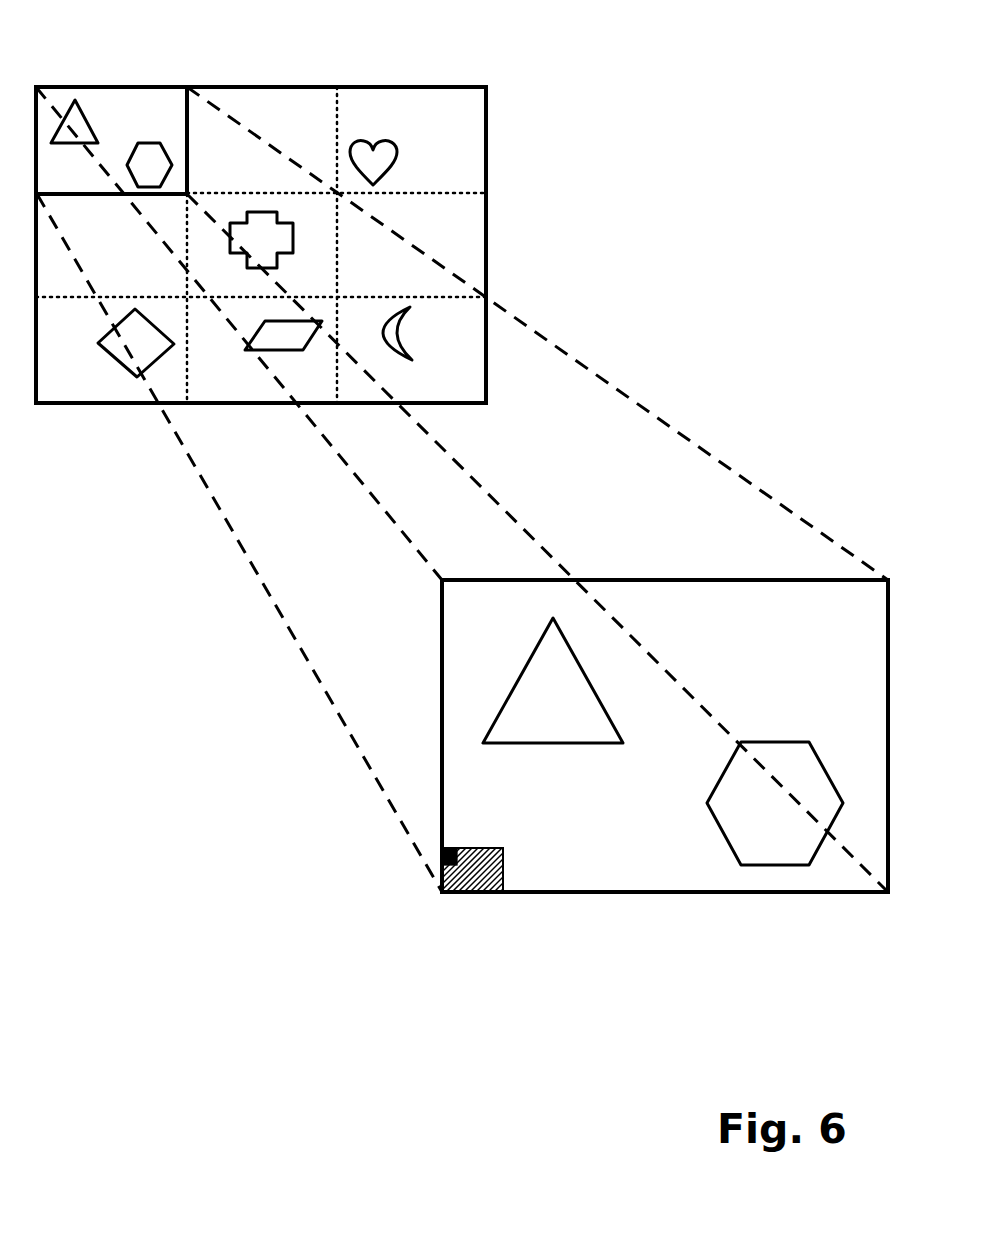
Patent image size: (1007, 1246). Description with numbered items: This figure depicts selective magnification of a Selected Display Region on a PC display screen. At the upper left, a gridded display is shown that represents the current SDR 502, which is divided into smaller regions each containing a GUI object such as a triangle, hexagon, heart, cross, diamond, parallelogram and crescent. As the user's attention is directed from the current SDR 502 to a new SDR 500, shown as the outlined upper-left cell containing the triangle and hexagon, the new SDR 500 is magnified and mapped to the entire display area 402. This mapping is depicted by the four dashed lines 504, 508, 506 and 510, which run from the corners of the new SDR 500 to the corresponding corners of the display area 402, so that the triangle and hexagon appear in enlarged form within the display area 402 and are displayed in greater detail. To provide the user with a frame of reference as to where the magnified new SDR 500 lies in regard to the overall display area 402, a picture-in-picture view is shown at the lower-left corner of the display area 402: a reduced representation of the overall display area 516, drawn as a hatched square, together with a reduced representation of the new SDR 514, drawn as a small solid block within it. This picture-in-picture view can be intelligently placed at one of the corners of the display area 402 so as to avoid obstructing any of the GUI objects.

The display area 402 is at (400, 688).
The new SDR 500 is at (125, 108).
The current SDR 502 is at (520, 190).
The dashed line 504 is at (595, 376).
The dashed line 506 is at (338, 457).
The dashed line 508 is at (508, 515).
The dashed line 510 is at (267, 595).
The reduced representation of the new SDR 514 is at (440, 855).
The reduced representation of the overall display area 516 is at (473, 892).